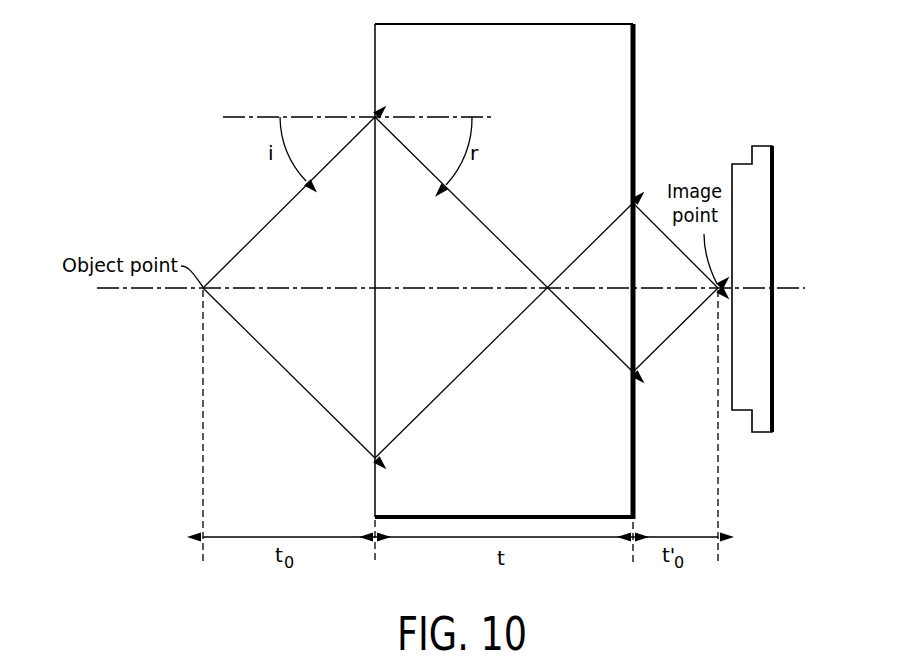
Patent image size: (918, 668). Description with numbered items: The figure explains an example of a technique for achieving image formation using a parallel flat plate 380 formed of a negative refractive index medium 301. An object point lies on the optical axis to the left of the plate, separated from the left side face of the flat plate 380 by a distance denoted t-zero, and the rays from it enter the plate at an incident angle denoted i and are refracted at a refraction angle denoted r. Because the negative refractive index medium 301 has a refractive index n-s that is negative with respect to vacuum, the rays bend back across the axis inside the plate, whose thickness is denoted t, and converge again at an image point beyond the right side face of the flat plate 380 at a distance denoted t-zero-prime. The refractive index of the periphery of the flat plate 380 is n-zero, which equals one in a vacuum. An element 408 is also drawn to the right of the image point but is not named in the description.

The negative refractive index medium 301 is at (617, 62).
The parallel flat plate 380 is at (636, 124).
The image sensor 408 is at (774, 358).